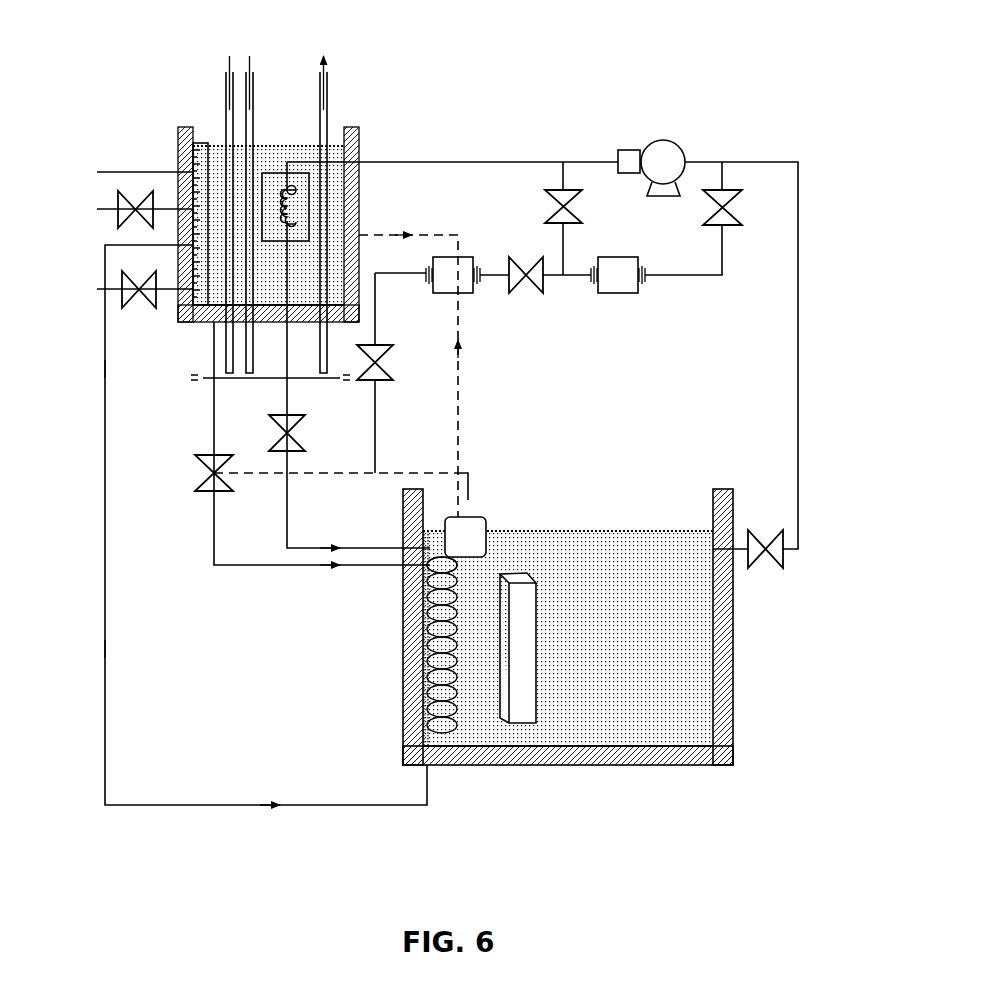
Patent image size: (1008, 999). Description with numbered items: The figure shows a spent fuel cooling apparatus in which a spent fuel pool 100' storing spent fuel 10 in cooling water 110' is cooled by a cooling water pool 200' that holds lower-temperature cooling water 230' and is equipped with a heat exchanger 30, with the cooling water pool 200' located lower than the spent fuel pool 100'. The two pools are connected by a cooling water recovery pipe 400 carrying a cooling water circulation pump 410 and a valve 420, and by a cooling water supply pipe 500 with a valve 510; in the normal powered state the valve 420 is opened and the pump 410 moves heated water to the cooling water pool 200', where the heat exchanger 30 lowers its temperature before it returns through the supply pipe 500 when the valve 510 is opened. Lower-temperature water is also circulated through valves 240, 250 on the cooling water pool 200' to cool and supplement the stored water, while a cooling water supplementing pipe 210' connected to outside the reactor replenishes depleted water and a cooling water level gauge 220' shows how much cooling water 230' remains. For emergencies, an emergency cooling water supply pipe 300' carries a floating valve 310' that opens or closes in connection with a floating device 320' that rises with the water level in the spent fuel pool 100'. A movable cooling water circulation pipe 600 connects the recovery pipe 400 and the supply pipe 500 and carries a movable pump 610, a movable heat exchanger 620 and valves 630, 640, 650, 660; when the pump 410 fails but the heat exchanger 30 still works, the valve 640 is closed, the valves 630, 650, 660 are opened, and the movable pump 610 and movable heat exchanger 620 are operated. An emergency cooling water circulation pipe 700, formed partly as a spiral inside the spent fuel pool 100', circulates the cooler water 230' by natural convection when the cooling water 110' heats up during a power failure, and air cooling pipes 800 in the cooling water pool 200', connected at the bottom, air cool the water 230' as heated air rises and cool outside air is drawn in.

The spent fuel 10 is at (519, 728).
The heat exchanger 30 is at (276, 173).
The spent fuel pool 100' is at (599, 627).
The cooling water 110' is at (568, 504).
The cooling water pool 200' is at (303, 222).
The cooling water supplementing pipe 210' is at (145, 136).
The cooling water level gauge 220' is at (173, 171).
The cooling water 230' is at (320, 171).
The valve 240 is at (118, 209).
The valve 250 is at (122, 289).
The emergency cooling water supply pipe 300' is at (287, 443).
The floating valve 310' is at (230, 453).
The floating device 320' is at (499, 517).
The cooling water recovery pipe 400 is at (800, 303).
The cooling water circulation pump 410 is at (675, 152).
The valve 420 is at (785, 561).
The cooling water supply pipe 500 is at (290, 522).
The valve 510 is at (300, 440).
The movable cooling water circulation pipe 600 is at (376, 395).
The movable pump 610 is at (618, 294).
The movable heat exchanger 620 is at (473, 294).
The valve 630 is at (728, 228).
The valve 640 is at (583, 212).
The valve 650 is at (545, 294).
The valve 660 is at (393, 364).
The emergency cooling water circulation pipe 700 is at (106, 718).
The air cooling pipe 800 is at (252, 80).